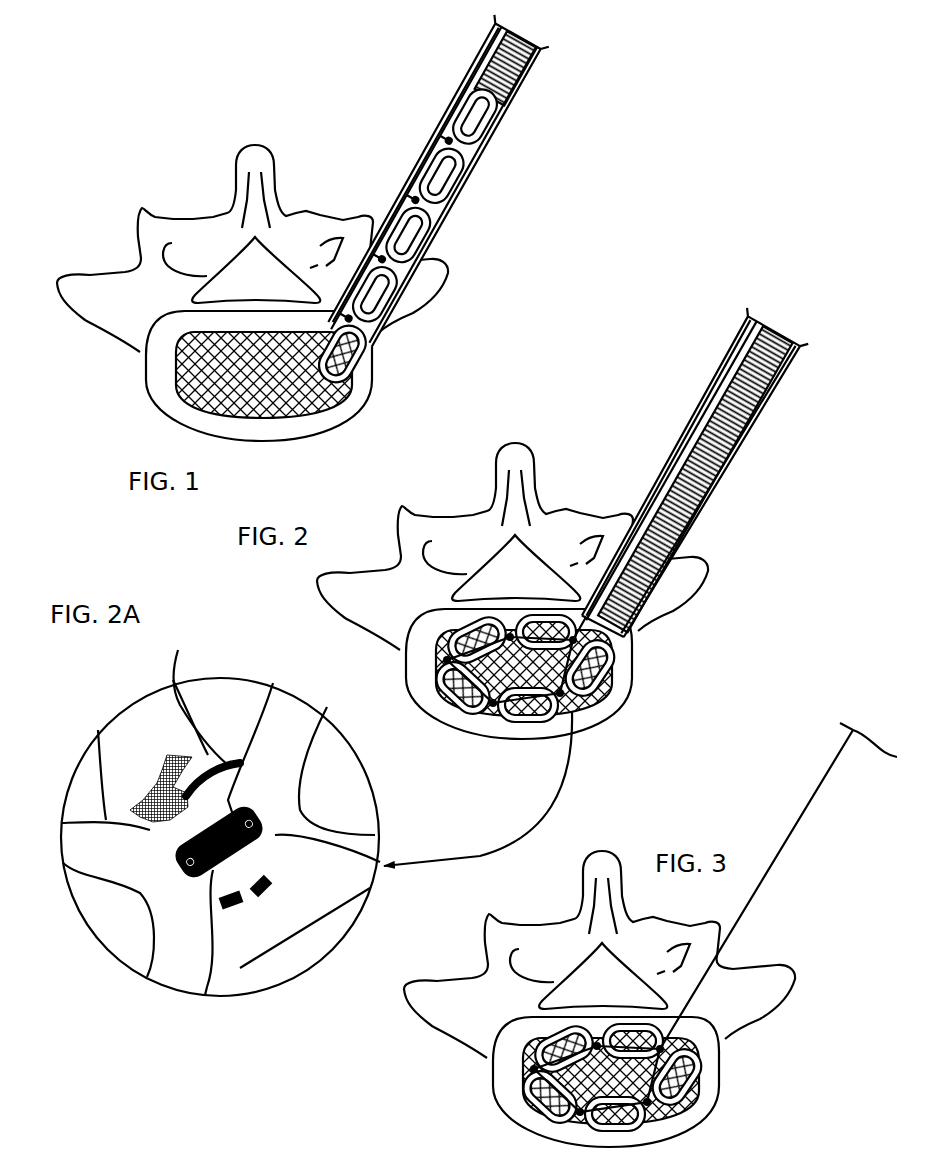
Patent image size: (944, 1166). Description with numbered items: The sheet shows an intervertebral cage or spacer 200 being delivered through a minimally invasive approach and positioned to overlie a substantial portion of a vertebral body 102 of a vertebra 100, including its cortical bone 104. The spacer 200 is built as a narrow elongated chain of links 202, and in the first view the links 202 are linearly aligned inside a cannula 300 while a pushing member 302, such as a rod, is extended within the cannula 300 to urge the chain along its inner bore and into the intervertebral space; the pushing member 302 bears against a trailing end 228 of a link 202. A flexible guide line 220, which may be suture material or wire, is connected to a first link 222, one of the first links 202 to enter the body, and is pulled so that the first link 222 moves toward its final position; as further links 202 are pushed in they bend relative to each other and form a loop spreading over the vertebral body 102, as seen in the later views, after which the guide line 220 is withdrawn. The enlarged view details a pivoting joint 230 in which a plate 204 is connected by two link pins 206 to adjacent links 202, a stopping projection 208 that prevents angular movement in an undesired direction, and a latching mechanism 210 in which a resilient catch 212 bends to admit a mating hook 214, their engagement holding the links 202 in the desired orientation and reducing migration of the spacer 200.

In FIG. 1, the vertebra 100 is at (265, 311).
In FIG. 1, the vertebral body 102 is at (362, 403).
In FIG. 2, the vertebral body 102 is at (592, 700).
In FIG. 3, the vertebral body 102 is at (510, 1054).
In FIG. 1, the cortical bone 104 is at (255, 402).
In FIG. 3, the cortical bone 104 is at (635, 1074).
In FIG. 1, the spacer 200 is at (462, 235).
In FIG. 2, the spacer 200 is at (523, 702).
In FIG. 2A, the spacer 200 is at (212, 717).
In FIG. 3, the spacer 200 is at (554, 1079).
In FIG. 1, the link 202 is at (427, 240).
In FIG. 2, the link 202 is at (466, 690).
In FIG. 2A, the link 202 is at (177, 968).
In FIG. 3, the link 202 is at (590, 1120).
In FIG. 2A, the plate 204 is at (165, 851).
In FIG. 2A, the link pin 206 is at (270, 843).
In FIG. 2A, the stopping projection 208 is at (231, 907).
In FIG. 2A, the latching mechanism 210 is at (158, 740).
In FIG. 2A, the resilient catch 212 is at (154, 758).
In FIG. 2A, the mating hook 214 is at (203, 713).
In FIG. 1, the flexible guide line 220 is at (362, 354).
In FIG. 2, the flexible guide line 220 is at (663, 472).
In FIG. 3, the flexible guide line 220 is at (780, 860).
In FIG. 1, the first link 222 is at (393, 373).
In FIG. 2, the first link 222 is at (510, 636).
In FIG. 3, the first link 222 is at (600, 1042).
In FIG. 1, the trailing end 228 is at (443, 176).
In FIG. 2A, the pivoting joint 230 is at (185, 898).
In FIG. 1, the cannula 300 is at (498, 137).
In FIG. 2, the cannula 300 is at (716, 516).
In FIG. 1, the pushing member 302 is at (526, 71).
In FIG. 2, the pushing member 302 is at (728, 418).